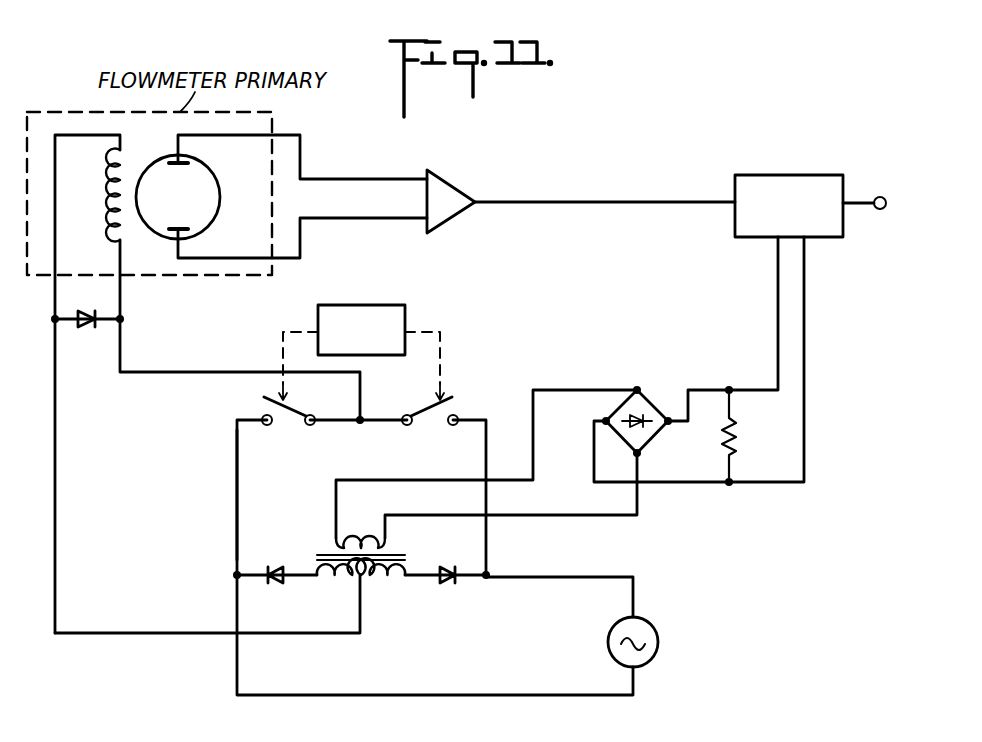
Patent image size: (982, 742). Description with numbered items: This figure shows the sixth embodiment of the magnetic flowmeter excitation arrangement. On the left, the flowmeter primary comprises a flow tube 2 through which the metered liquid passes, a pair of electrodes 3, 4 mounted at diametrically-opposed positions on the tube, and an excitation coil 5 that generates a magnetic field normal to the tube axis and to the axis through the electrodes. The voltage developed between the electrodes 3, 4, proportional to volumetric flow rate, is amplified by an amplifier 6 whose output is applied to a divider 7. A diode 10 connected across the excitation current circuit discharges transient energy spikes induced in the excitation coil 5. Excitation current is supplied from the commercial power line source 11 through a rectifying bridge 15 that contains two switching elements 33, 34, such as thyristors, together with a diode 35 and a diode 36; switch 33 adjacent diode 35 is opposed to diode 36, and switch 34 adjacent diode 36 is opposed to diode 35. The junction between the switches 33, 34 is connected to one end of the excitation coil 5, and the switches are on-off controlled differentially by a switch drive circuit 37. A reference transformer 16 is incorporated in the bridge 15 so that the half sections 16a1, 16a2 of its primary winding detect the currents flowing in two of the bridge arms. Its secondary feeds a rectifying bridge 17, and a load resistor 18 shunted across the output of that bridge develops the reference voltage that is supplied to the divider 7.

The flow tube 2 is at (166, 158).
The electrode 3 is at (181, 168).
The electrode 4 is at (185, 226).
The excitation coil 5 is at (110, 213).
The amplifier 6 is at (452, 187).
The divider 7 is at (788, 177).
The diode 10 is at (82, 327).
The power line source 11 is at (658, 632).
The rectifying bridge 15 is at (258, 492).
The reference transformer 16 is at (325, 545).
The half section of primary winding 16a1 is at (355, 584).
The half section of primary winding 16a2 is at (381, 586).
The rectifying bridge 17 is at (653, 441).
The load resistor 18 is at (736, 448).
The switching element 33 is at (286, 430).
The switching element 34 is at (428, 430).
The diode 35 is at (272, 566).
The diode 36 is at (448, 566).
The switch drive circuit 37 is at (375, 305).